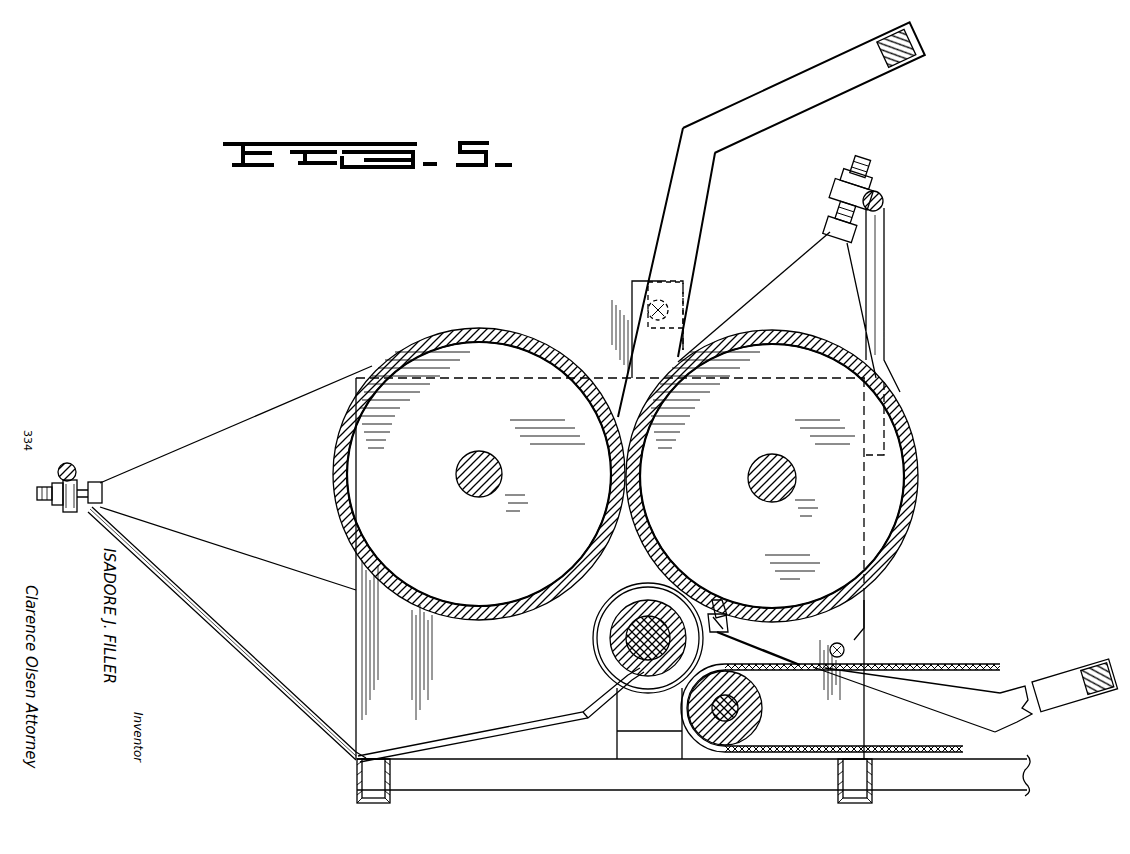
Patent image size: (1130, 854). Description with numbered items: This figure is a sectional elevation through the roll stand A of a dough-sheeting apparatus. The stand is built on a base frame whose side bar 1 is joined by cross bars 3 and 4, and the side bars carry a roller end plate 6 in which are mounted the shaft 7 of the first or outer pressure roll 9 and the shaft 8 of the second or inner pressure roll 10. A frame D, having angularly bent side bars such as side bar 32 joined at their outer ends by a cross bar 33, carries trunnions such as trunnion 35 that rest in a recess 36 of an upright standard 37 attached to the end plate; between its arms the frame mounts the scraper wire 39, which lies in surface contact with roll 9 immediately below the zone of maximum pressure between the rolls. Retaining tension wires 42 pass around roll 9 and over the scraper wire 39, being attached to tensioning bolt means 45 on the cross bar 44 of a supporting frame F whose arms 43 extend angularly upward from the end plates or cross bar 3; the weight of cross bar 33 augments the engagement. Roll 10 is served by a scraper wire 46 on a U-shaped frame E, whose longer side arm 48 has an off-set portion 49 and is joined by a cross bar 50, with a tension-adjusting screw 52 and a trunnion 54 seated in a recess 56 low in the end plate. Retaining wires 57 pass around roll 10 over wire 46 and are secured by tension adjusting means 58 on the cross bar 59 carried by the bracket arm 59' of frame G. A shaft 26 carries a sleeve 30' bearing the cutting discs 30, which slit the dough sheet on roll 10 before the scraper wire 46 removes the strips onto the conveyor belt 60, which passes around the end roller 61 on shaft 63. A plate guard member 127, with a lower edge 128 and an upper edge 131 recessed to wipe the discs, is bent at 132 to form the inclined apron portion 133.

The side bar 1 is at (1030, 775).
The cross bar 3 is at (393, 779).
The cross bar 4 is at (875, 783).
The roller end plate 6 is at (356, 650).
The shaft 7 is at (488, 498).
The shaft 8 is at (786, 498).
The first pressure roll 9 is at (336, 483).
The second pressure roll 10 is at (920, 493).
The shaft 26 is at (628, 652).
The cutting disc 30 is at (628, 638).
The sleeve 30' is at (624, 638).
The side bar 32 is at (742, 200).
The cross bar 33 is at (925, 42).
The trunnion 35 is at (684, 300).
The recess 36 is at (633, 300).
The upright standard 37 is at (684, 336).
The scraper wire 39 is at (625, 486).
The retaining tension wire 42 is at (268, 411).
The arm 43 is at (192, 598).
The cross bar 44 is at (75, 468).
The tensioning bolt means 45 is at (70, 512).
The scraper wire 46 is at (728, 610).
The side arm 48 is at (900, 667).
The angularly off-set portion 49 is at (1018, 722).
The cross bar 50 is at (1093, 697).
The tension-adjusting screw 52 is at (754, 639).
The trunnion 54 is at (830, 650).
The recess 56 is at (856, 638).
The retaining wire 57 is at (762, 292).
The tension adjusting means 58 is at (830, 210).
The cross bar 59 is at (894, 194).
The bracket arm 59' is at (892, 300).
The conveyor belt 60 is at (965, 670).
The end roller 61 is at (757, 722).
The shaft 63 is at (750, 703).
The plate guard member 127 is at (526, 727).
The lower edge 128 is at (368, 755).
The upper edge 131 is at (627, 678).
The bend 132 is at (590, 720).
The apron portion 133 is at (622, 700).
The roll stand A is at (612, 378).
The frame D is at (748, 98).
The U-shaped frame E is at (1065, 676).
The supporting frame F is at (232, 645).
The supporting frame G is at (893, 211).